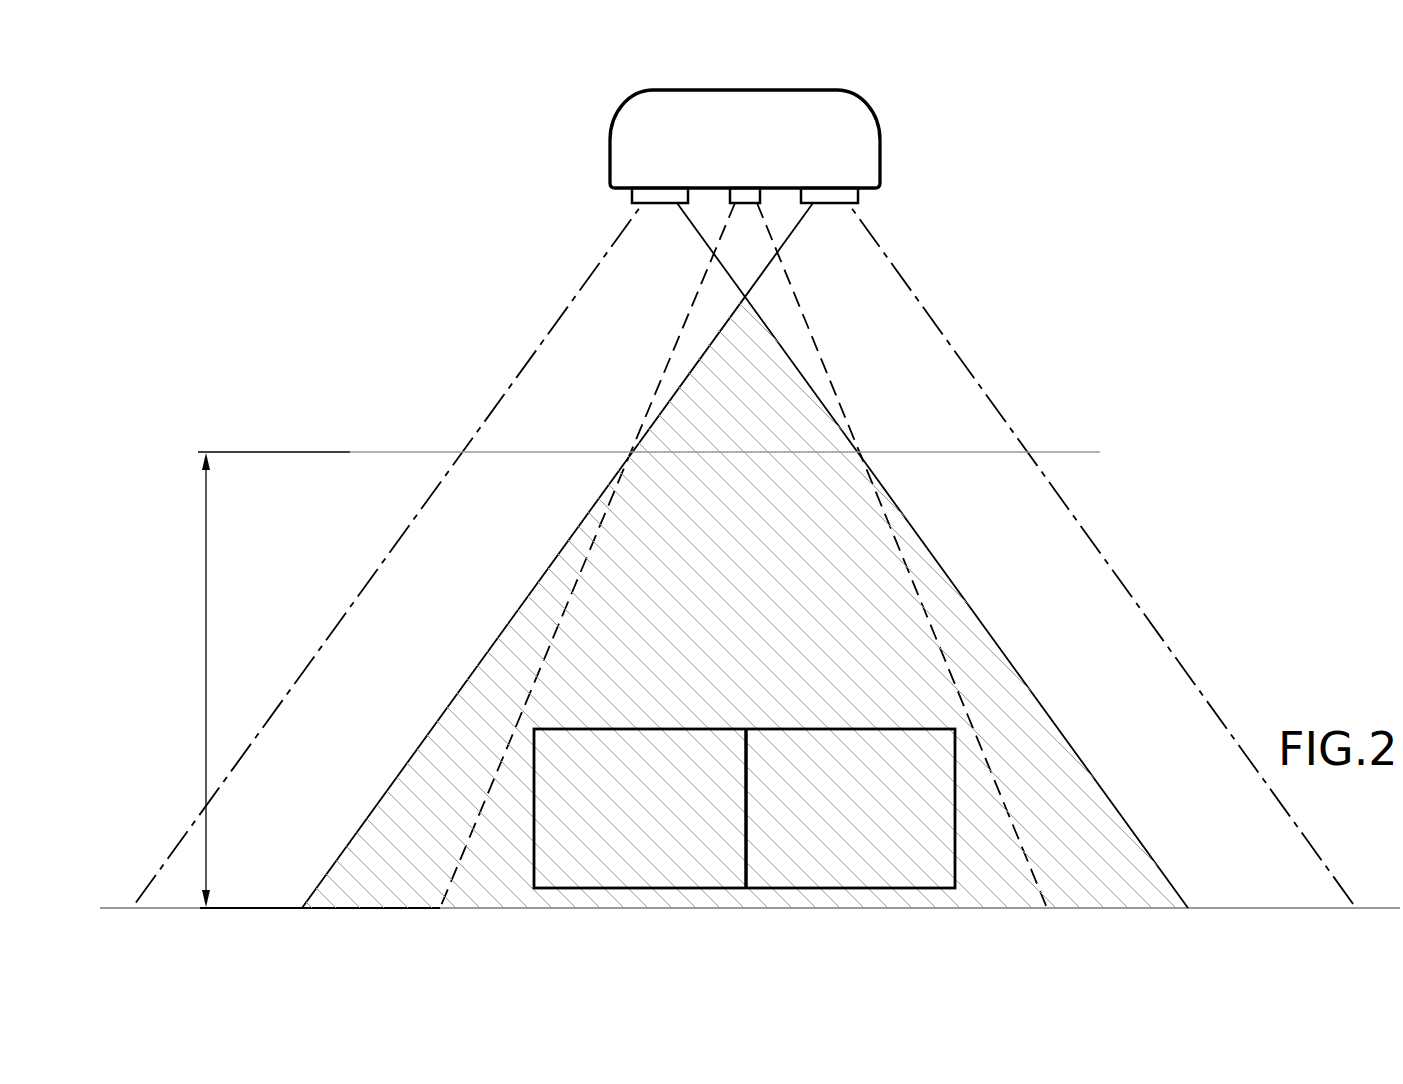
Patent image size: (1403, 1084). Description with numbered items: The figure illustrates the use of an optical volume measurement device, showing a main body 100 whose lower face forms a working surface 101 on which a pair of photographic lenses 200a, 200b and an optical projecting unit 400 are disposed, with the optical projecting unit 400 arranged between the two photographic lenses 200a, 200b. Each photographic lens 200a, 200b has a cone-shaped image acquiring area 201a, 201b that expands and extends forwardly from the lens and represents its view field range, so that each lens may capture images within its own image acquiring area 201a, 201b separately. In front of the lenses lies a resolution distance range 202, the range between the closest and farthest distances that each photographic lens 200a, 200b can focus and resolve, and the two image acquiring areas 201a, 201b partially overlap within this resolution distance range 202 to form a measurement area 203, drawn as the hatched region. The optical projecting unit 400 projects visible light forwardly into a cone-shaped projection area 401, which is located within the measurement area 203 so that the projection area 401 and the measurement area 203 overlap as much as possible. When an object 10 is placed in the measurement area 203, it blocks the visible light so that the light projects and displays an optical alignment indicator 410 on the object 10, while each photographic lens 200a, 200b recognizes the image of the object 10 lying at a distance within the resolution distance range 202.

The main body 100 is at (860, 132).
The photographic lens 200b is at (633, 197).
The photographic lens 200a is at (857, 198).
The optical projecting unit 400 is at (760, 197).
The working surface 101 is at (691, 222).
The image acquiring area 201b is at (500, 400).
The image acquiring area 201a is at (990, 403).
The projection area 401 is at (823, 373).
The measurement area 203 is at (770, 609).
The resolution distance range 202 is at (640, 679).
The object 10 is at (940, 787).
The optical alignment indicator 410 is at (752, 790).